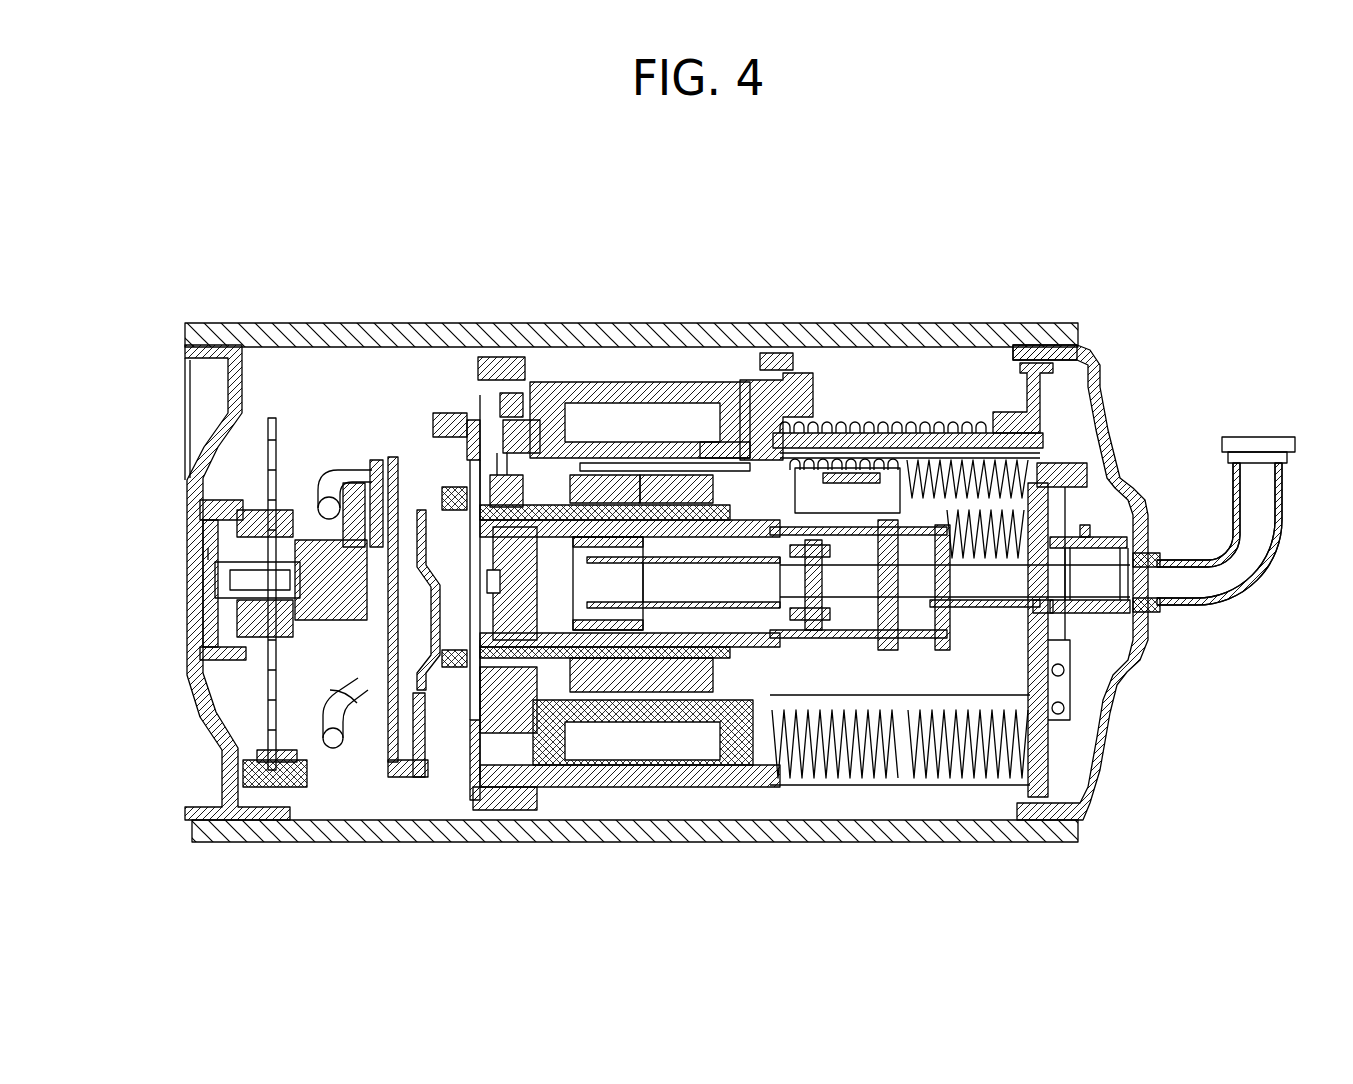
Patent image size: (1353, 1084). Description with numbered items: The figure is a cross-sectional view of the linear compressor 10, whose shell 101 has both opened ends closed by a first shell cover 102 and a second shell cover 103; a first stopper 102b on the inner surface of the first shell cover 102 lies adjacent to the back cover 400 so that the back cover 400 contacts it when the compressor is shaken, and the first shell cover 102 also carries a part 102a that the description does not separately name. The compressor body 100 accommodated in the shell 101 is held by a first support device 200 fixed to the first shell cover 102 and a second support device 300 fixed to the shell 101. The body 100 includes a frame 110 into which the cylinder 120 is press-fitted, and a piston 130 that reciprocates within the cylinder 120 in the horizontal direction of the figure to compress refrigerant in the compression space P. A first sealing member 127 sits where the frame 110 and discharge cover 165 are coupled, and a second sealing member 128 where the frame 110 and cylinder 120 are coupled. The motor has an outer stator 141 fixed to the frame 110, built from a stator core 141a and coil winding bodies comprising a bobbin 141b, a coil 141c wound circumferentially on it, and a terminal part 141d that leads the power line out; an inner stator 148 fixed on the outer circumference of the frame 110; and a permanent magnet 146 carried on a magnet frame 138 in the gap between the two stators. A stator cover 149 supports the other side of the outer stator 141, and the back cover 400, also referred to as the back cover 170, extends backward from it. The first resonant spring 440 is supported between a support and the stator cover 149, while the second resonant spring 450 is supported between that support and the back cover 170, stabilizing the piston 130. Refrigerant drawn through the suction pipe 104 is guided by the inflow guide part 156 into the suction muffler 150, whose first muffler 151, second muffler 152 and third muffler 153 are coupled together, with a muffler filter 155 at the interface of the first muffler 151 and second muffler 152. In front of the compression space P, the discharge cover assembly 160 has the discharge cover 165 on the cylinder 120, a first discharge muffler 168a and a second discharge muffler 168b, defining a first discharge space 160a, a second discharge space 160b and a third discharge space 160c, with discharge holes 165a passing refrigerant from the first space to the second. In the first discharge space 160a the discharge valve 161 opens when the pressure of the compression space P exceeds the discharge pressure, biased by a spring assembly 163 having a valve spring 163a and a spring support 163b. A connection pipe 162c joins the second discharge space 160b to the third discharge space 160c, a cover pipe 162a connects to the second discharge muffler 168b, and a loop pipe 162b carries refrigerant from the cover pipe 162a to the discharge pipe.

The linear compressor 10 is at (657, 218).
The compressor body 100 is at (610, 340).
The shell 101 is at (915, 330).
The first shell cover 102 is at (1103, 372).
The discharge port 102a is at (1110, 543).
The first stopper 102b is at (1040, 352).
The second shell cover 103 is at (215, 442).
The suction pipe 104 is at (1248, 592).
The frame 110 is at (510, 472).
The cylinder 120 is at (605, 647).
The first sealing member 127 is at (490, 810).
The second sealing member 128 is at (710, 663).
The piston 130 is at (683, 642).
The magnet frame 138 is at (760, 440).
The outer stator 141 is at (548, 363).
The stator core 141a is at (715, 440).
The bobbin 141b is at (598, 430).
The coil 141c is at (702, 420).
The terminal part 141d is at (488, 393).
The permanent magnet 146 is at (625, 473).
The inner stator 148 is at (655, 475).
The stator cover 149 is at (780, 368).
The suction muffler 150 is at (848, 905).
The first muffler 151 is at (800, 645).
The second muffler 152 is at (888, 650).
The third muffler 153 is at (940, 650).
The muffler filter 155 is at (835, 632).
The inflow guide part 156 is at (1005, 605).
The discharge cover assembly 160 is at (383, 255).
The first discharge space 160a is at (420, 612).
The second discharge space 160b is at (395, 585).
The third discharge space 160c is at (400, 688).
The discharge valve 161 is at (435, 622).
The cover pipe 162a is at (318, 497).
The loop pipe 162b is at (325, 720).
The connection pipe 162c is at (357, 705).
The spring assembly 163 is at (418, 283).
The valve spring 163a is at (472, 418).
The spring support 163b is at (450, 485).
The discharge cover 165 is at (393, 456).
The discharge hole 165a is at (376, 462).
The first discharge muffler 168a is at (295, 508).
The second discharge muffler 168b is at (330, 538).
The back cover 170 is at (958, 425).
The first support device 200 is at (1092, 457).
The second support device 300 is at (246, 470).
The back cover 400 is at (852, 468).
The first resonant spring 440 is at (818, 587).
The second resonant spring 450 is at (1000, 780).
The compression space P is at (208, 553).